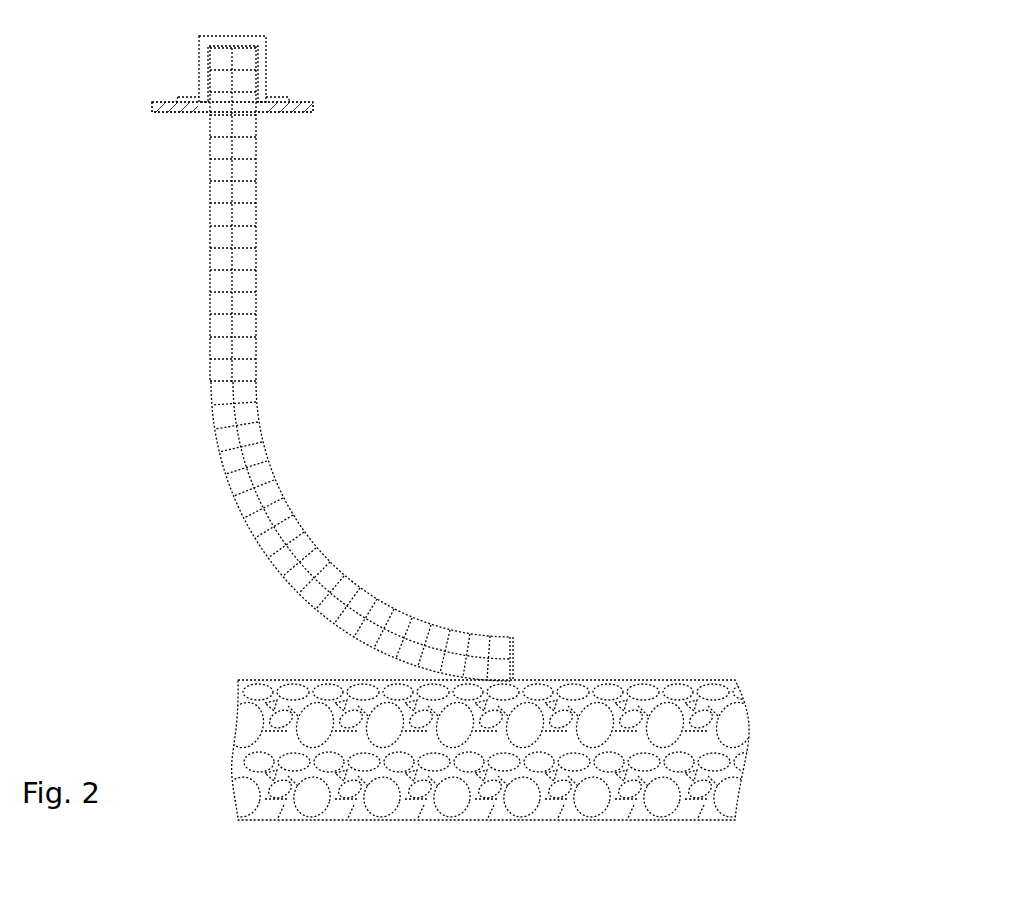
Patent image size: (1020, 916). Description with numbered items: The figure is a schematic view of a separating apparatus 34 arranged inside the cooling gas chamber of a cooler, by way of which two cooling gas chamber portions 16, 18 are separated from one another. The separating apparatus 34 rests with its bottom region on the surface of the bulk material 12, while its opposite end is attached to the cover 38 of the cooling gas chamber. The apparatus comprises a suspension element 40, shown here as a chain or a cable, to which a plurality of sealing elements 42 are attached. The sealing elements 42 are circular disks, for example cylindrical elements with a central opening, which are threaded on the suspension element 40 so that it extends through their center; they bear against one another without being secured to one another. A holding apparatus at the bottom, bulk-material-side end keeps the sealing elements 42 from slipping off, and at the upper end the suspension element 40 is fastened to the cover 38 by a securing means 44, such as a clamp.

The bulk material 12 is at (533, 713).
The cooling gas chamber portion 16 is at (44, 373).
The cooling gas chamber portion 18 is at (589, 358).
The separating apparatus 34 is at (410, 185).
The cover 38 is at (152, 104).
The suspension element 40 is at (232, 337).
The sealing element 42 is at (262, 458).
The securing means 44 is at (198, 93).